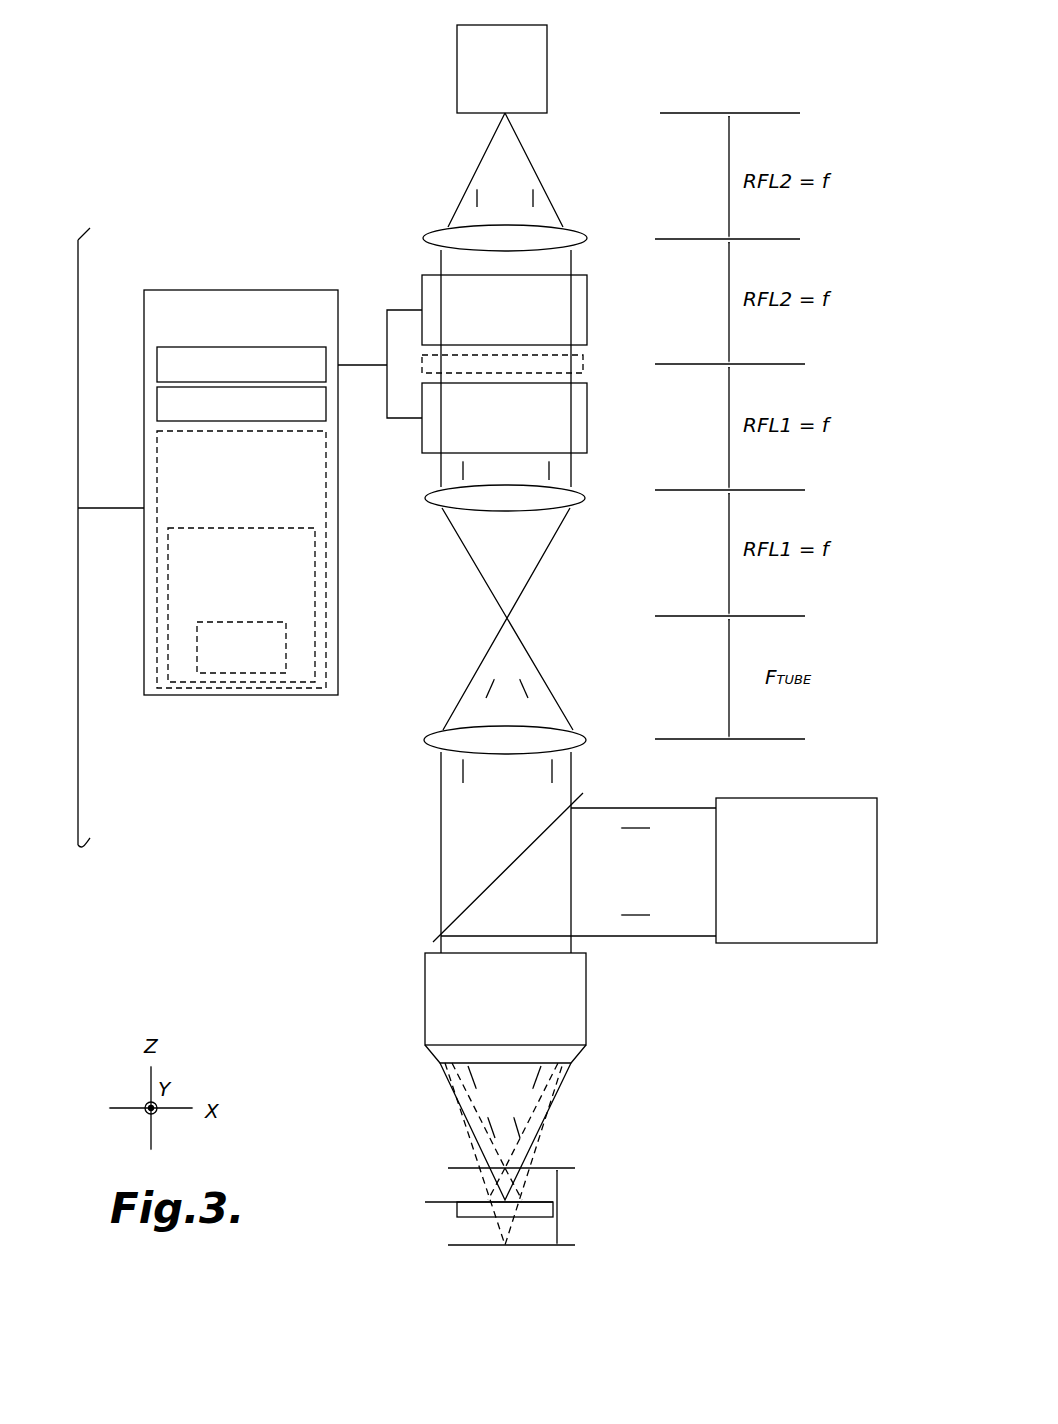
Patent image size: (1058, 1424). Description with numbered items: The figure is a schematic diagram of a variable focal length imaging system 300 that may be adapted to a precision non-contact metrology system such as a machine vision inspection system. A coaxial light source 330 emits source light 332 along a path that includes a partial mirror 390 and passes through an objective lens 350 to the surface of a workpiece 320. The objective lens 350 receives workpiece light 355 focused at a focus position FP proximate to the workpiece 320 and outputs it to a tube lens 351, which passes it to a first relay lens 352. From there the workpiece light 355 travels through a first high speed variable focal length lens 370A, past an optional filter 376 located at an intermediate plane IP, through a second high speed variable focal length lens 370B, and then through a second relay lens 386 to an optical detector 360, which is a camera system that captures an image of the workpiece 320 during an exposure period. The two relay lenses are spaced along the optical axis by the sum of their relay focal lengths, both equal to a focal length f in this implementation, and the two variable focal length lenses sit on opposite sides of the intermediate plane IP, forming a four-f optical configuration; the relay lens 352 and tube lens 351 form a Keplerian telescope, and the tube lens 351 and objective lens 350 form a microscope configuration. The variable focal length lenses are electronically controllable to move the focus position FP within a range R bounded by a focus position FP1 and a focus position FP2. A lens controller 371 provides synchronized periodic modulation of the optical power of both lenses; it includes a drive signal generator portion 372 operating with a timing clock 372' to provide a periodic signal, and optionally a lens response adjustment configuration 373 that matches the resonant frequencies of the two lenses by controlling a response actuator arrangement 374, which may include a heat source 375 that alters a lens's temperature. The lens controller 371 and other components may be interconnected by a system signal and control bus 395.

The variable focal length imaging system 300 is at (808, 62).
The optical detector 360 is at (547, 57).
The second relay lens 386 is at (423, 238).
The second high speed variable focal length lens 370B is at (587, 318).
The filter 376 is at (583, 367).
The first high speed variable focal length lens 370A is at (587, 424).
The first relay lens 352 is at (585, 498).
The tube lens 351 is at (586, 732).
The partial mirror 390 is at (455, 915).
The light source 330 is at (835, 797).
The source light 332 is at (648, 913).
The objective lens 350 is at (586, 995).
The workpiece light 355 is at (480, 205).
The workpiece 320 is at (457, 1208).
The lens controller 371 is at (177, 290).
The drive signal generator portion 372 is at (208, 363).
The timing clock 372' is at (207, 403).
The lens response adjustment configuration 373 is at (157, 460).
The response actuator arrangement 374 is at (157, 565).
The heat source 375 is at (197, 662).
The system signal and control bus 395 is at (80, 822).
The intermediate plane IP is at (786, 364).
The focus position FP1 is at (555, 1168).
The focus position FP2 is at (567, 1245).
The focus position FP is at (425, 1202).
The range R is at (557, 1190).